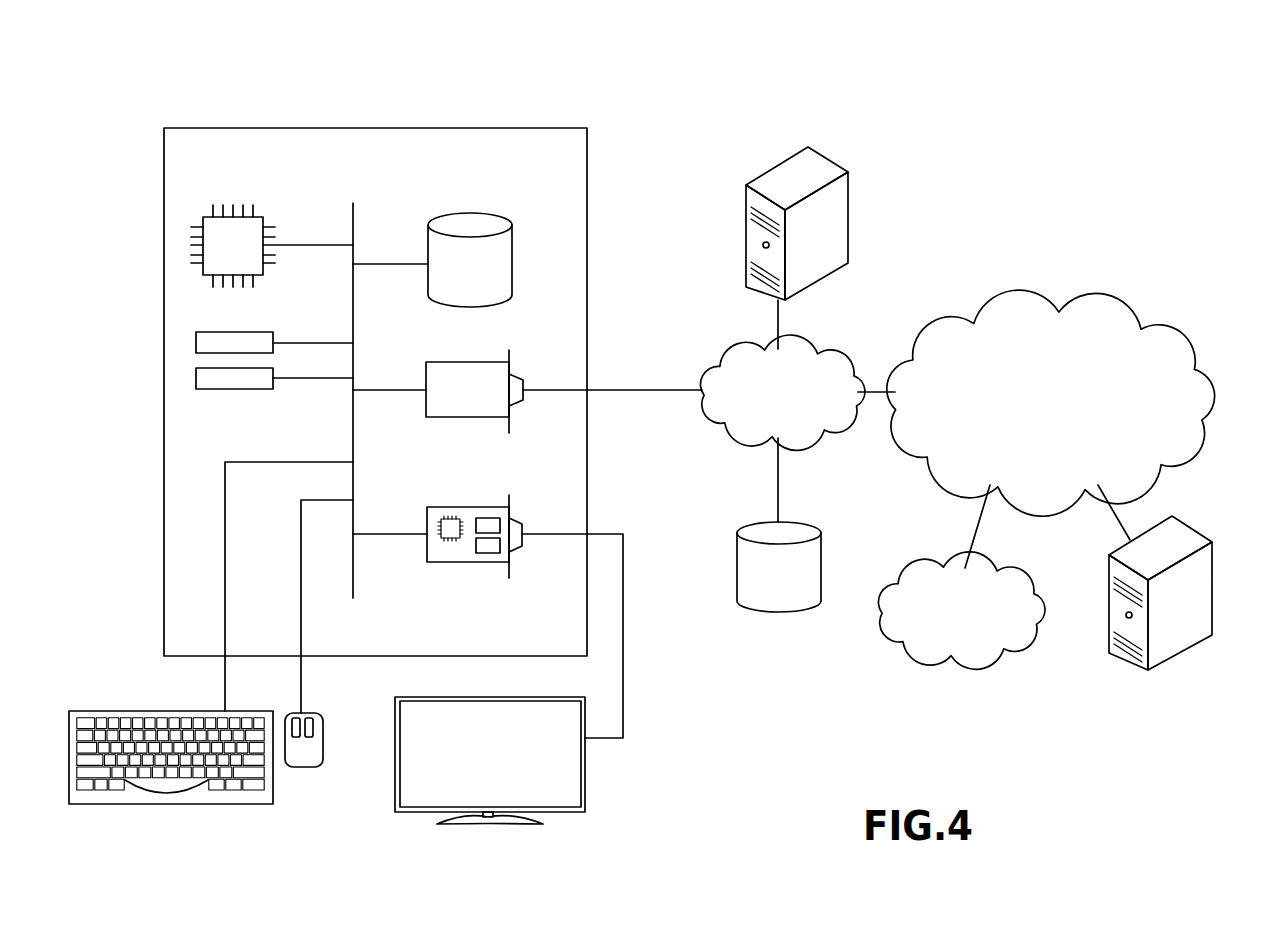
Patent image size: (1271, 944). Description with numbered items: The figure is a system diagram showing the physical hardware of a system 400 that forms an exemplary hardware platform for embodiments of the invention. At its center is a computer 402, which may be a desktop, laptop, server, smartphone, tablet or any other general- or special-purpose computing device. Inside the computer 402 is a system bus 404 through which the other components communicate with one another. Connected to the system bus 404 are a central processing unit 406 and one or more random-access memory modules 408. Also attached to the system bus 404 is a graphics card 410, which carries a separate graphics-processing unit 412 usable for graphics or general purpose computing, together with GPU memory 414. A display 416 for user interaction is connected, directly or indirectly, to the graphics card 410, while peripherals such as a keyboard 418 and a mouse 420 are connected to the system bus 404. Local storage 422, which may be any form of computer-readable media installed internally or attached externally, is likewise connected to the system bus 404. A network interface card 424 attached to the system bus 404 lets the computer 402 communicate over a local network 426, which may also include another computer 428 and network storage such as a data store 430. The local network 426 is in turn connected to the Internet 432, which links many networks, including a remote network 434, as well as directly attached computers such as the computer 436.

The system 400 is at (234, 84).
The computer 402 is at (537, 128).
The system bus 404 is at (355, 215).
The central processing unit 406 is at (259, 213).
The random-access memory modules 408 is at (276, 376).
The graphics card 410 is at (427, 518).
The graphics-processing unit 412 is at (450, 533).
The GPU memory 414 is at (486, 549).
The display 416 is at (585, 790).
The keyboard 418 is at (173, 805).
The mouse 420 is at (300, 767).
The local storage 422 is at (513, 245).
The network interface card 424 is at (426, 372).
The local network 426 is at (832, 350).
The computer 428 is at (838, 161).
The data store 430 is at (812, 524).
The Internet 432 is at (1093, 310).
The remote network 434 is at (1015, 568).
The computer 436 is at (1192, 526).